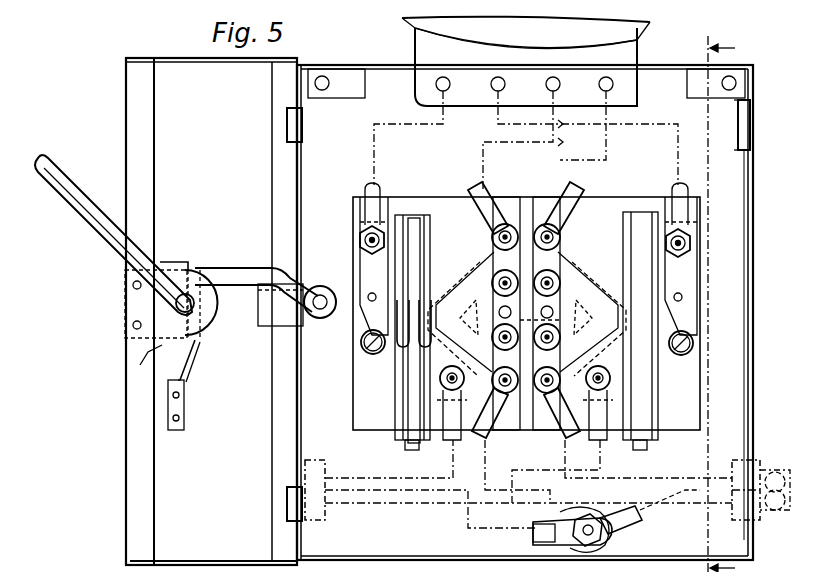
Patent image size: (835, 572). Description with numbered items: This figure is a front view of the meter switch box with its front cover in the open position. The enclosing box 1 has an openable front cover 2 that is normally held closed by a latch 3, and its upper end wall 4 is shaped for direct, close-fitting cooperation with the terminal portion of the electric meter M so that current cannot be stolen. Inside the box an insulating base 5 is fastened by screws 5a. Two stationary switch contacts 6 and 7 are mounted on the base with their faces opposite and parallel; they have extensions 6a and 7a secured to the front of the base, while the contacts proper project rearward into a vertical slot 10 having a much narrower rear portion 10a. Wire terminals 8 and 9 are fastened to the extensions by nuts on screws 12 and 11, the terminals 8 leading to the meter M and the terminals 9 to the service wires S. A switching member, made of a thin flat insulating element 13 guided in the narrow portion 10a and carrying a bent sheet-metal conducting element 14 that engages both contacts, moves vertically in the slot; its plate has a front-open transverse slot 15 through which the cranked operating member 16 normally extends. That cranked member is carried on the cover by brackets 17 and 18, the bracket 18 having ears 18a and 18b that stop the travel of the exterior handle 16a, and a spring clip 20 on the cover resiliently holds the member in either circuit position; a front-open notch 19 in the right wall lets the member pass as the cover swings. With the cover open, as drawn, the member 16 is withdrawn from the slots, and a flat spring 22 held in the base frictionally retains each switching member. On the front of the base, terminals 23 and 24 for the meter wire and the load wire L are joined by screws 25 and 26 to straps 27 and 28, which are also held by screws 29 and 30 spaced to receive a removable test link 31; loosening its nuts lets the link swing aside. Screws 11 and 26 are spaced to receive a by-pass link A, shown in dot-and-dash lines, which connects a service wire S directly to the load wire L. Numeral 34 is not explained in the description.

The enclosing box 1 is at (753, 190).
The openable front cover 2 is at (126, 110).
The latch 3 is at (738, 125).
The upper end wall 4 is at (372, 66).
The insulating base 5 is at (640, 200).
The screws 5a is at (373, 355).
The stationary switch contact 6 is at (745, 48).
The extension 6a is at (365, 278).
The stationary switch contact 7 is at (592, 300).
The extension 7a is at (546, 362).
The wire terminal 8 is at (368, 190).
The wire terminal 9 is at (450, 442).
The vertical slot 10 is at (418, 215).
The narrower rear portion 10a is at (410, 215).
The screw 11 is at (440, 382).
The screw 12 is at (360, 240).
The insulating element 13 is at (420, 232).
The conducting element 14 is at (374, 354).
The transverse slot 15 is at (420, 270).
The cranked operating member 16 is at (236, 268).
The handle 16a is at (92, 220).
The bracket 17 is at (306, 318).
The bracket 18 is at (207, 318).
The ear 18a is at (168, 262).
The ear 18b is at (140, 362).
The notch 19 is at (753, 298).
The spring clip 20 is at (188, 362).
The flat spring 22 is at (408, 448).
The wire terminal 23 is at (492, 192).
The wire terminal 24 is at (485, 440).
The screw 25 is at (515, 215).
The screw 26 is at (550, 368).
The strap 27 is at (492, 252).
The strap 28 is at (515, 380).
The screw 29 is at (492, 284).
The screw 30 is at (492, 342).
The test link 31 is at (525, 309).
The cross bar 34 is at (562, 330).
The electric meter M is at (645, 24).
The load wire L is at (670, 506).
The service wires S is at (384, 478).
The by-pass link A is at (527, 395).